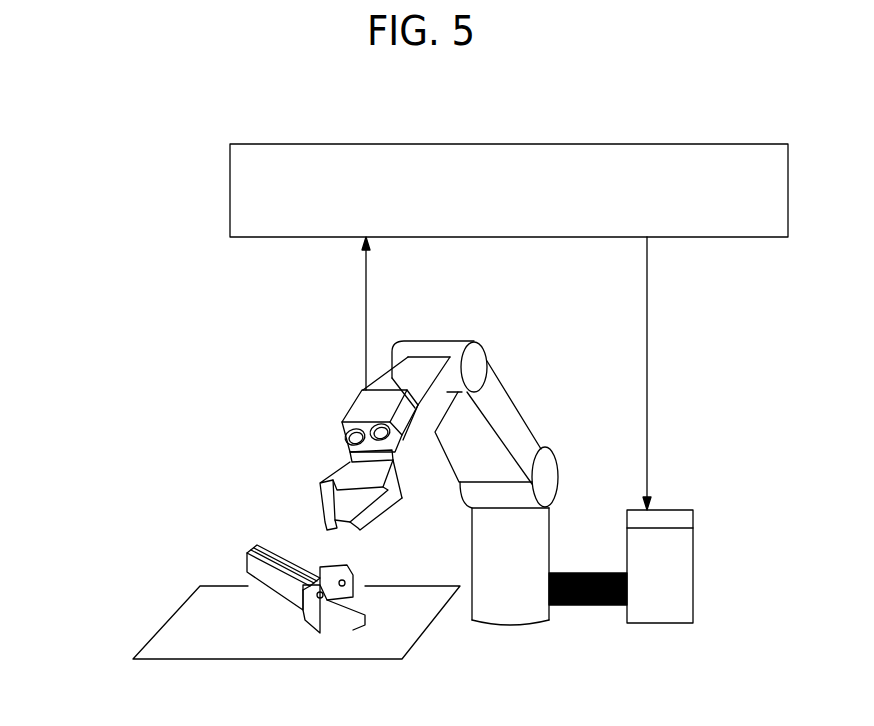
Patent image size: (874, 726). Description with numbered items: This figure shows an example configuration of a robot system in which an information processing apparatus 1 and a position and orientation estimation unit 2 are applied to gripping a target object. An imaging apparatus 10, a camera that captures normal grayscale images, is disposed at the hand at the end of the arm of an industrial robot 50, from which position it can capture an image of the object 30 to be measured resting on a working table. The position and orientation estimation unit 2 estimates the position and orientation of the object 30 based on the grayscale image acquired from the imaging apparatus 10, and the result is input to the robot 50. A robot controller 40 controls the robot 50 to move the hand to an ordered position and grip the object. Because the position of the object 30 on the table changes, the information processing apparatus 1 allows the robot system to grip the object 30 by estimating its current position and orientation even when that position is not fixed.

The information processing apparatus 1 is at (509, 190).
The position and orientation estimation unit 2 is at (509, 190).
The imaging apparatus 10 is at (366, 408).
The object to be measured 30 is at (248, 552).
The robot controller 40 is at (672, 508).
The robot 50 is at (510, 625).